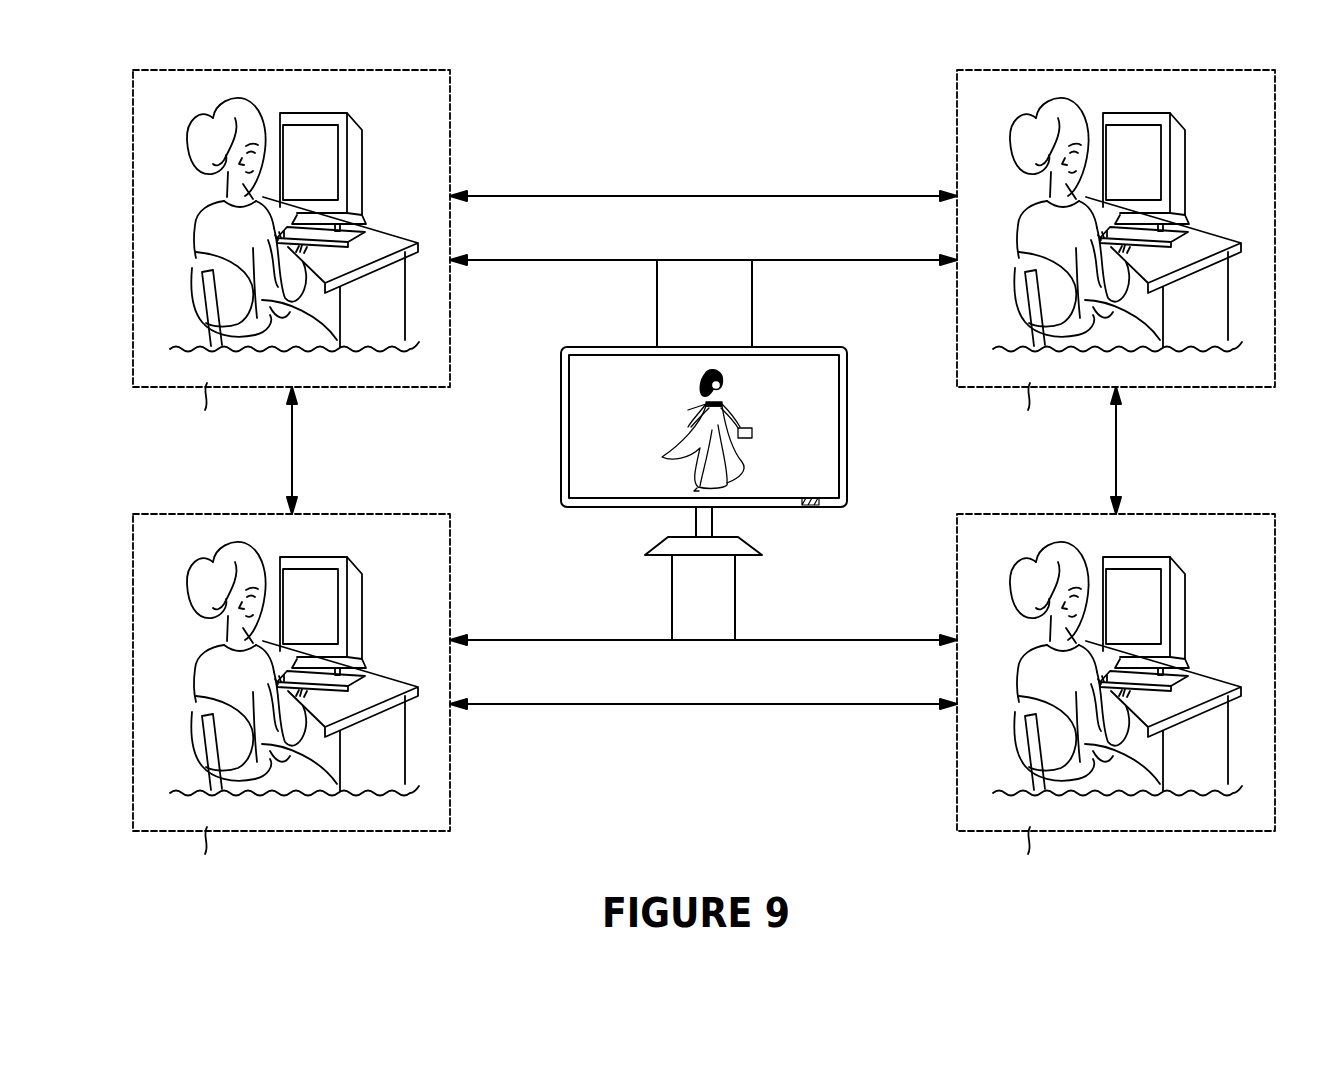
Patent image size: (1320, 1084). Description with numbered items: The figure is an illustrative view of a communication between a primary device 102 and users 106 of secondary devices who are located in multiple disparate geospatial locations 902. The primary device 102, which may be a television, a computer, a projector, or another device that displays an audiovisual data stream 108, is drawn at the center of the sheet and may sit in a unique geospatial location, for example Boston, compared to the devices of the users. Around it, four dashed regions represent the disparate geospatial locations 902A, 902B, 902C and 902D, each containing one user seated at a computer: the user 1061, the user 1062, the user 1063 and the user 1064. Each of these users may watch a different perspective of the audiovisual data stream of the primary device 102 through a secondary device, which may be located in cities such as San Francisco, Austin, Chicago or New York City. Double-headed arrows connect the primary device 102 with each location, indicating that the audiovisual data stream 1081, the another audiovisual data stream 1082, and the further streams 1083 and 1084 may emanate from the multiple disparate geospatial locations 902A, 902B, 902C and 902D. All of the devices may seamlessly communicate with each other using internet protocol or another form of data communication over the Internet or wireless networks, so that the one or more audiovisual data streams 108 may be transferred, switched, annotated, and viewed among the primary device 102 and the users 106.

The primary device 102 is at (732, 375).
The user 106 is at (326, 270).
The user 1061 is at (300, 333).
The user 1062 is at (300, 777).
The user 1063 is at (1123, 333).
The user 1064 is at (1123, 777).
The audiovisual data stream 108 is at (300, 232).
The audiovisual data stream 1081 is at (353, 172).
The another audiovisual data stream 1082 is at (353, 616).
The audiovisual data stream 1083 is at (1176, 172).
The audiovisual data stream 1084 is at (1176, 616).
The disparate geospatial location 902 is at (290, 281).
The disparate geospatial location 902A is at (290, 281).
The disparate geospatial location 902B is at (291, 721).
The disparate geospatial location 902C is at (1116, 277).
The disparate geospatial location 902D is at (1116, 721).